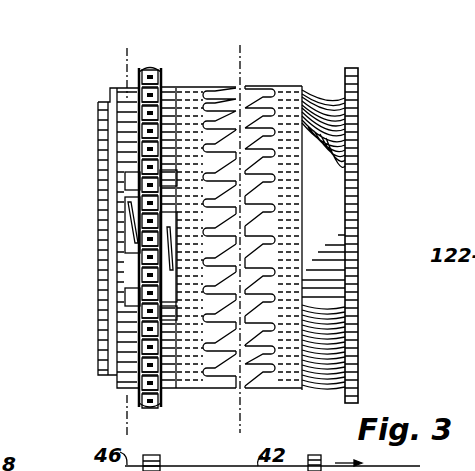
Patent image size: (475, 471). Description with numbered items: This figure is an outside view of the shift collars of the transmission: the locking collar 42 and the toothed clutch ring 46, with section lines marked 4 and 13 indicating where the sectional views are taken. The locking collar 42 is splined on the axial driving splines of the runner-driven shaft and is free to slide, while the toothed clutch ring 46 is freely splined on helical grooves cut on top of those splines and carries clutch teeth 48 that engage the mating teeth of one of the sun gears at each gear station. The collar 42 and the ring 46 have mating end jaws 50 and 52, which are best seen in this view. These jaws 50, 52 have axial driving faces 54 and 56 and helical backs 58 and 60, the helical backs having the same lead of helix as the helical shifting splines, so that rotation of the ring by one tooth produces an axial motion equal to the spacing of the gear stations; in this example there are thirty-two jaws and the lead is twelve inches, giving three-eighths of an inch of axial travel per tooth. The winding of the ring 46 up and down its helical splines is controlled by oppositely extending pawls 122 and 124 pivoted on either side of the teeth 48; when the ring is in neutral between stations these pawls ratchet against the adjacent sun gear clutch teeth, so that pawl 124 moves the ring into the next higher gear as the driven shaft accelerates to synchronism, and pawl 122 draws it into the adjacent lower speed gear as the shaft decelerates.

The section line 4- 4 is at (243, 425).
The section line 13- 13 is at (124, 430).
The locking collar 42 is at (358, 349).
The toothed clutch ring 46 is at (118, 387).
The clutch teeth 48 is at (143, 66).
The end jaws 50 is at (266, 198).
The end jaws 52 is at (231, 335).
The axial driving face 54 is at (266, 224).
The axial driving face 56 is at (236, 388).
The helical back 58 is at (330, 306).
The helical back 60 is at (232, 90).
The pawl 122 is at (127, 288).
The pawl 124 is at (128, 200).